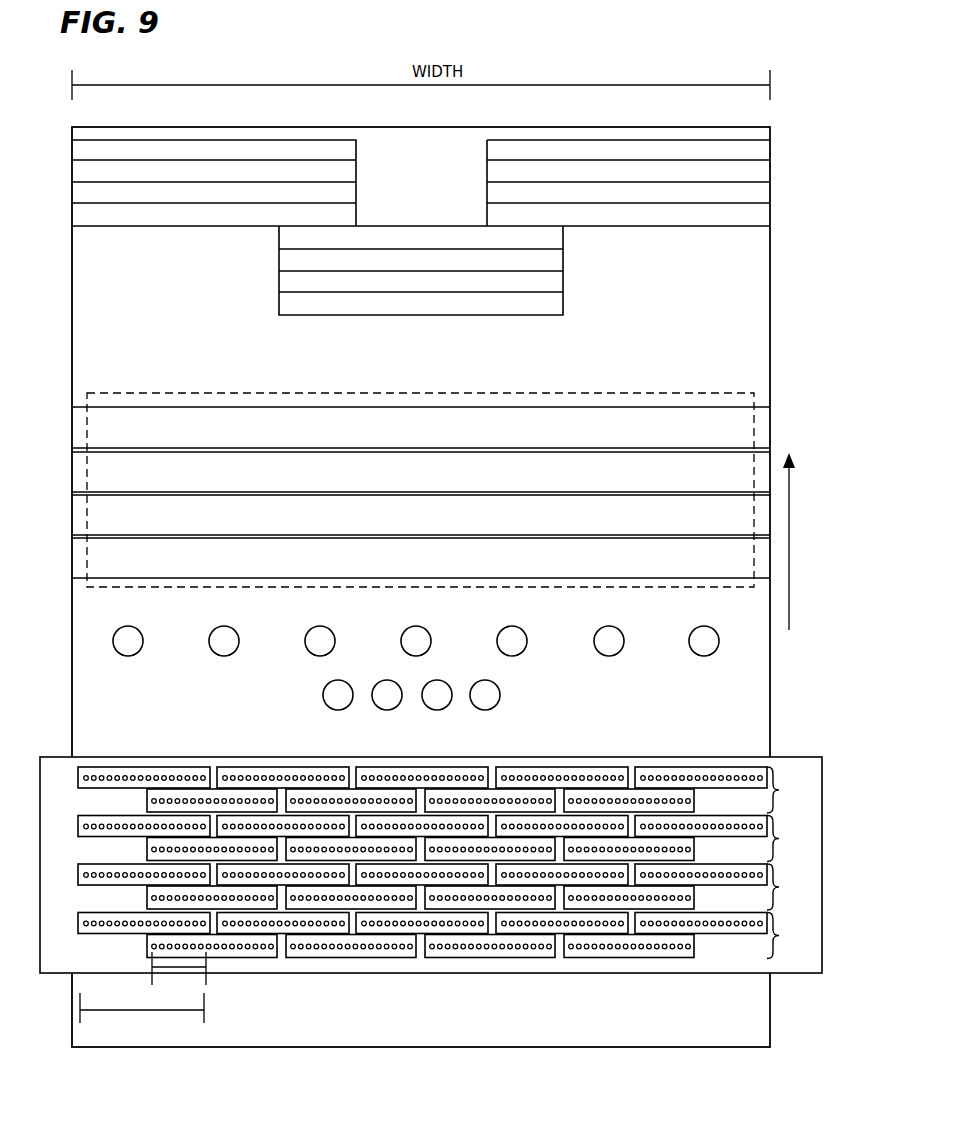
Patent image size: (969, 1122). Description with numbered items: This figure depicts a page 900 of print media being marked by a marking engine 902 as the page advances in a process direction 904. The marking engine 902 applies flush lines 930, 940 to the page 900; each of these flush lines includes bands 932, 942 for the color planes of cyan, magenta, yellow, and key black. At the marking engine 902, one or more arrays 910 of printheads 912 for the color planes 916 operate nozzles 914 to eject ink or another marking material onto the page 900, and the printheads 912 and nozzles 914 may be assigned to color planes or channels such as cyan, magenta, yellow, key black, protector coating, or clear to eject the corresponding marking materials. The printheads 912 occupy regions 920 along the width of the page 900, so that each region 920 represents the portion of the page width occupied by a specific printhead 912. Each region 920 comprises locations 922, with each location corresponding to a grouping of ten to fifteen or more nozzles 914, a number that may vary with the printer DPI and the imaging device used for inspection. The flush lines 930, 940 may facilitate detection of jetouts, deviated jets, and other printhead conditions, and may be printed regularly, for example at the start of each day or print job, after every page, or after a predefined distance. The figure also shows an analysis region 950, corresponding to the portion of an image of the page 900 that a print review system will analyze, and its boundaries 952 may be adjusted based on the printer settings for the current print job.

The page 900 is at (771, 347).
The marking engine 902 is at (431, 881).
The process direction 904 is at (789, 630).
The array of printheads 910 is at (314, 973).
The printhead 912 is at (422, 864).
The nozzle 914 is at (110, 778).
The color plane 916 is at (789, 863).
The region 920 is at (142, 1012).
The location 922 is at (179, 975).
The flush line 930 is at (424, 510).
The band 932 is at (66, 407).
The flush line 940 is at (394, 227).
The band 942 is at (64, 140).
The analysis region 950 is at (418, 393).
The boundary 952 is at (540, 392).